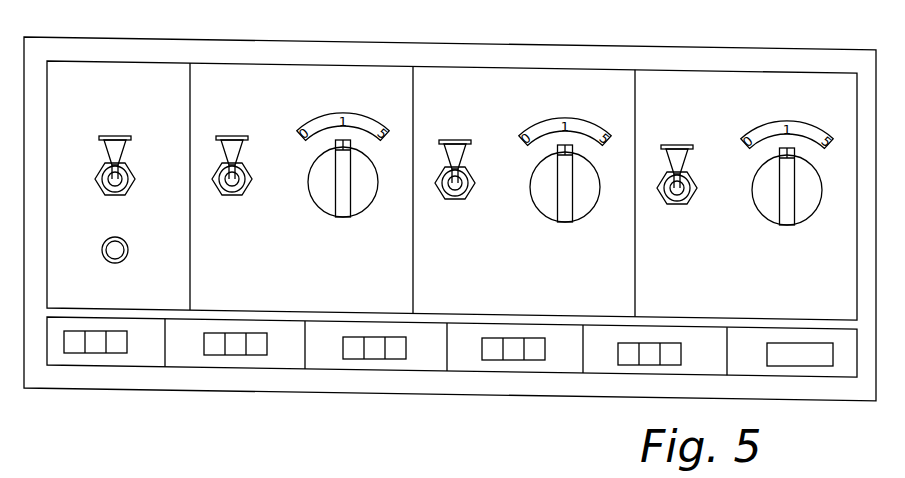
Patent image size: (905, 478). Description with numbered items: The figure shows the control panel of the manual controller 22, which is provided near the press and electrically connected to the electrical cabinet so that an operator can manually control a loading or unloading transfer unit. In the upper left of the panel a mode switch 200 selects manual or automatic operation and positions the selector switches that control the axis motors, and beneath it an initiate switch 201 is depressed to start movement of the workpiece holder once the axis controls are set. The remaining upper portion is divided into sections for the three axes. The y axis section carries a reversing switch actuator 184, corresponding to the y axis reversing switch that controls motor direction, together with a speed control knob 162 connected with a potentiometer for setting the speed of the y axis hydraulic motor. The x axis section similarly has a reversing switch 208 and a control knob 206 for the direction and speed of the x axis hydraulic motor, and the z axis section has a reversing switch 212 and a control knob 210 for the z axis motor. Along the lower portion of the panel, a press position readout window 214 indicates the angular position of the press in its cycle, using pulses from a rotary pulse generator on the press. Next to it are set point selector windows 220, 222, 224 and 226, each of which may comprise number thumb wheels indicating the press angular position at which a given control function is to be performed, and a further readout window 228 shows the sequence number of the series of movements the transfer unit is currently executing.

The manual controller 22 is at (513, 45).
The mode switch 200 is at (127, 142).
The initiate switch 201 is at (126, 244).
The reversing switch actuator 184 is at (236, 176).
The speed control knob 162 is at (335, 217).
The reversing switch 208 is at (460, 190).
The control knob 206 is at (576, 205).
The reversing switch 212 is at (680, 192).
The control knob 210 is at (797, 213).
The press position readout window 214 is at (126, 352).
The set point selector window 220 is at (247, 333).
The set point selector window 222 is at (368, 337).
The set point selector window 224 is at (508, 338).
The set point selector window 226 is at (668, 343).
The readout window 228 is at (790, 343).